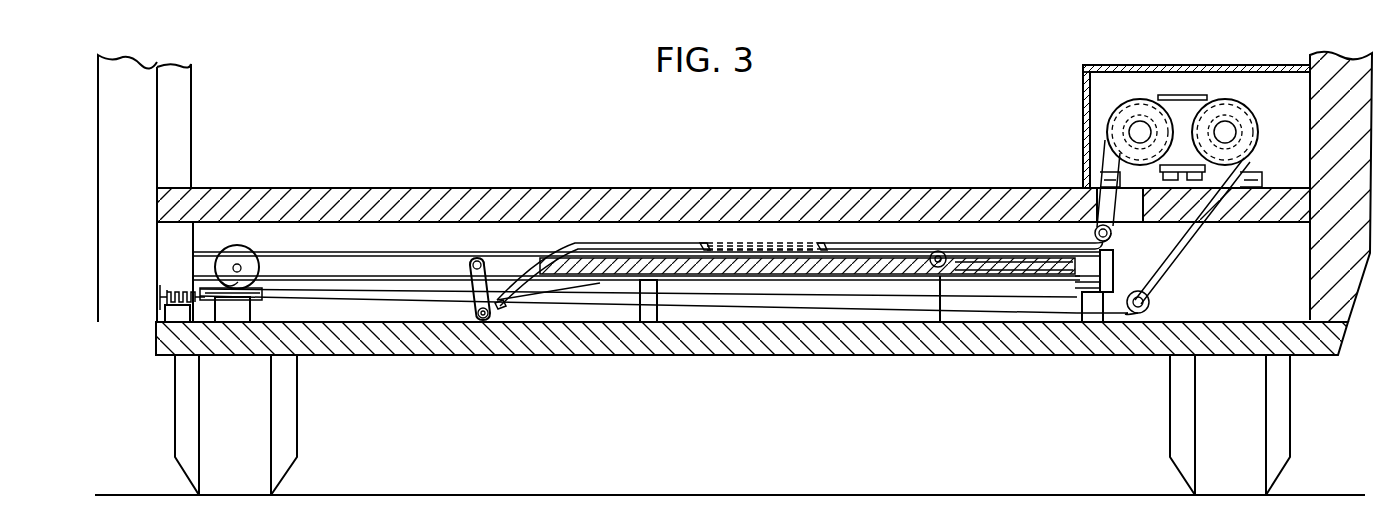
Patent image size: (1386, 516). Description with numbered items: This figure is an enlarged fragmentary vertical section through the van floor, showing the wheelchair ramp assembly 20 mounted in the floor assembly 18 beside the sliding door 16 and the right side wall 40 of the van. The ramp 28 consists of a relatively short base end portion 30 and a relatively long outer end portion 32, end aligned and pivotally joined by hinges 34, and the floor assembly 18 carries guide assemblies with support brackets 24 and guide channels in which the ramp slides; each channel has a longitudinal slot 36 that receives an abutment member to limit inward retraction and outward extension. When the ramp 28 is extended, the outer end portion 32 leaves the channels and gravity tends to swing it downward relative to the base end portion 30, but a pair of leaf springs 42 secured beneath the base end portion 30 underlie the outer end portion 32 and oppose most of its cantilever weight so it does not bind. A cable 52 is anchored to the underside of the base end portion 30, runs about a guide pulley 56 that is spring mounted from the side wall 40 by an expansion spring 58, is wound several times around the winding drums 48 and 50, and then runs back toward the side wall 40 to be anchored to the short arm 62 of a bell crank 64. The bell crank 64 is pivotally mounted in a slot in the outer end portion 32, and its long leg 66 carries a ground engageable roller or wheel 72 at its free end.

The sliding door 16 is at (108, 86).
The floor assembly 18 is at (882, 200).
The ramp assembly 20 is at (722, 282).
The support brackets 24 is at (165, 312).
The ramp 28 is at (668, 268).
The base end portion 30 is at (1005, 270).
The outer end portion 32 is at (777, 270).
The hinges 34 is at (938, 270).
The longitudinal slot 36 is at (1108, 262).
The right side wall 40 is at (180, 125).
The leaf springs 42 is at (598, 283).
The winding drum 48 is at (1115, 120).
The winding drum 50 is at (1250, 122).
The cable 52 is at (560, 248).
The guide pulley 56 is at (245, 325).
The expansion spring 58 is at (185, 295).
The short arm 62 is at (485, 262).
The bell crank 64 is at (478, 318).
The long leg 66 is at (360, 258).
The ground engageable roller or wheel 72 is at (237, 250).